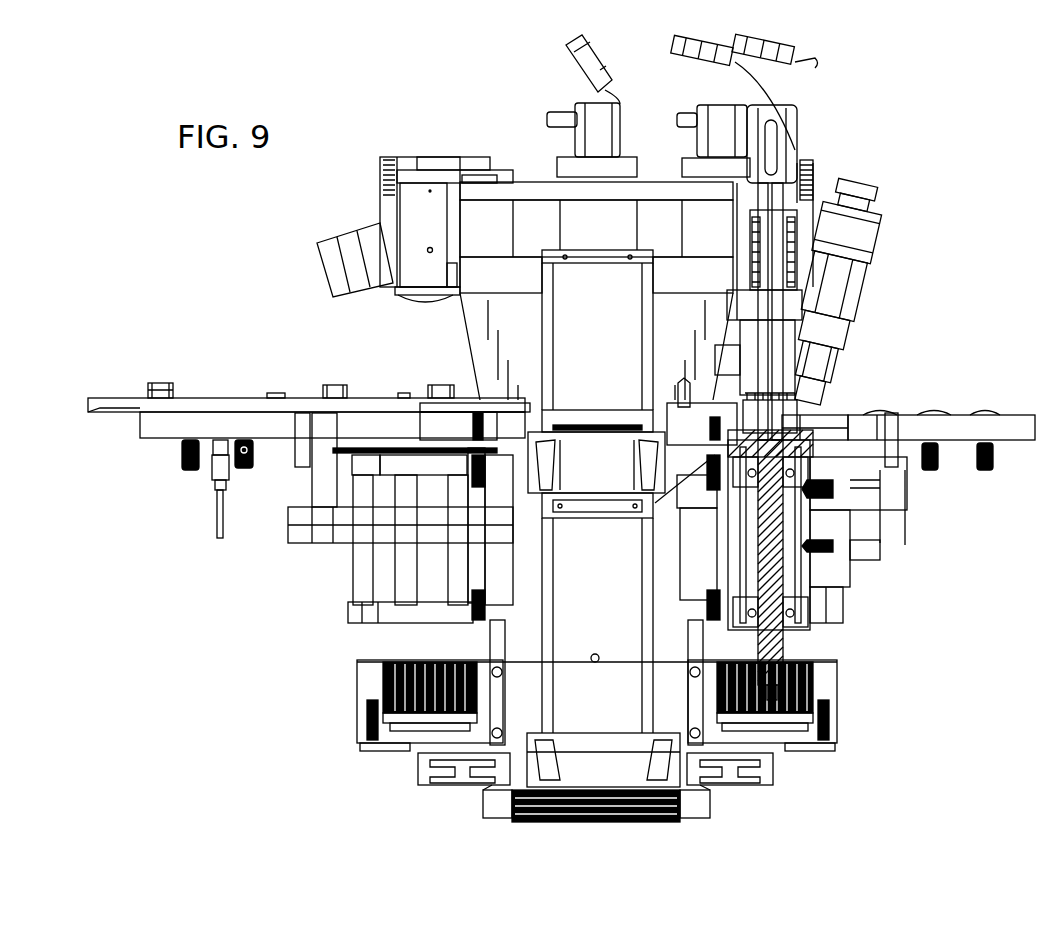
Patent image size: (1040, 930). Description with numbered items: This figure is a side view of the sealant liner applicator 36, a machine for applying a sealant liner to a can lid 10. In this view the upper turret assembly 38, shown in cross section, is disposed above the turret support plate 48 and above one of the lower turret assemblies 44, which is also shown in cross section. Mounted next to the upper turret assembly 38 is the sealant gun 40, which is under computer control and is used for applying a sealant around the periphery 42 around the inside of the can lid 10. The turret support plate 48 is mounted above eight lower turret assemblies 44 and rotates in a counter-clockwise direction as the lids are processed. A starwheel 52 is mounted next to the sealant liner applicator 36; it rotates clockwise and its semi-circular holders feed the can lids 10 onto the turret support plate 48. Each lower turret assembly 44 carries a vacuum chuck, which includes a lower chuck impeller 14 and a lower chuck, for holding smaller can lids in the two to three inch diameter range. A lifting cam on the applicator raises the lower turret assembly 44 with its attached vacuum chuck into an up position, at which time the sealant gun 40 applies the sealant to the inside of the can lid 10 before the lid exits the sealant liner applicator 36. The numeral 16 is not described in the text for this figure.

The can lid 10 is at (820, 412).
The lower chuck impeller 14 is at (890, 416).
The support bracket 16 is at (870, 450).
The sealant liner applicator 36 is at (938, 263).
The upper turret assembly 38 is at (787, 228).
The sealant gun 40 is at (852, 265).
The periphery 42 is at (800, 402).
The lower turret assembly 44 is at (772, 565).
The turret support plate 48 is at (738, 440).
The starwheel 52 is at (410, 400).